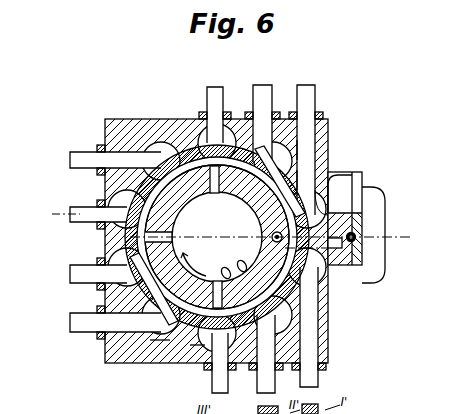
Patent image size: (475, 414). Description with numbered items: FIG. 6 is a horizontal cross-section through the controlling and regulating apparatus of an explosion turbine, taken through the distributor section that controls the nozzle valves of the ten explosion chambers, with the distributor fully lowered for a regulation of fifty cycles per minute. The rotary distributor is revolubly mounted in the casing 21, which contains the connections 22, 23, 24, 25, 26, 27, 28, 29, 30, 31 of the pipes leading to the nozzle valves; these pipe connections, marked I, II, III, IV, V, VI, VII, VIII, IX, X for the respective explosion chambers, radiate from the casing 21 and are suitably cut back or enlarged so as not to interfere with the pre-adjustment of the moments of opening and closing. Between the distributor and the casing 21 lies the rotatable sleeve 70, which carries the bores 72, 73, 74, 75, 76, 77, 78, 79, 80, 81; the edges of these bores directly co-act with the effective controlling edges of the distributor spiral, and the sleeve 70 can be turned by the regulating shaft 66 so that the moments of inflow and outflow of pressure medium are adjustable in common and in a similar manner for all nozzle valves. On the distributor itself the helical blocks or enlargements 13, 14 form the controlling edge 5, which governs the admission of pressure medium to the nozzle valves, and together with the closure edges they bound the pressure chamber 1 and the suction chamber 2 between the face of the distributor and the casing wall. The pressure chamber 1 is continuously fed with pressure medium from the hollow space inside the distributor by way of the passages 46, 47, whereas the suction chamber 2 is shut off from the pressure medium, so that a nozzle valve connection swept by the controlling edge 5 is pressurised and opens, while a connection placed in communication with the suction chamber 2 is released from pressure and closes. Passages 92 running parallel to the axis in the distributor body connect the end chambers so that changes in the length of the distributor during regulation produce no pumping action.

The pressure chamber 1 is at (197, 163).
The suction chamber 2 is at (292, 295).
The controlling edge 5 is at (231, 226).
The block or enlargement 13 is at (291, 300).
The block or enlargement 14 is at (318, 192).
The casing 21 is at (125, 135).
The connection 22 is at (318, 114).
The connection 23 is at (275, 112).
The connection 24 is at (228, 110).
The connection 25 is at (117, 162).
The connection 26 is at (97, 205).
The connection 27 is at (110, 272).
The connection 28 is at (97, 335).
The connection 29 is at (208, 370).
The connection 30 is at (256, 371).
The connection 31 is at (320, 357).
The passage 46 is at (217, 237).
The passage 47 is at (229, 267).
The regulating shaft 66 is at (355, 237).
The sleeve 70 is at (300, 180).
The bore 72 is at (330, 198).
The bore 73 is at (300, 150).
The bore 74 is at (203, 112).
The bore 75 is at (167, 163).
The bore 76 is at (100, 229).
The bore 77 is at (102, 289).
The bore 78 is at (161, 342).
The bore 79 is at (196, 347).
The bore 80 is at (280, 313).
The bore 81 is at (294, 263).
The passage 92 is at (272, 235).
The nozzle valve connection I is at (306, 100).
The nozzle valve connection II is at (258, 95).
The nozzle valve connection III is at (214, 100).
The nozzle valve connection IV is at (75, 160).
The nozzle valve connection V is at (72, 220).
The nozzle valve connection VI is at (80, 275).
The nozzle valve connection VII is at (82, 323).
The nozzle valve connection VIII is at (213, 392).
The nozzle valve connection IX is at (262, 373).
The nozzle valve connection X is at (310, 373).